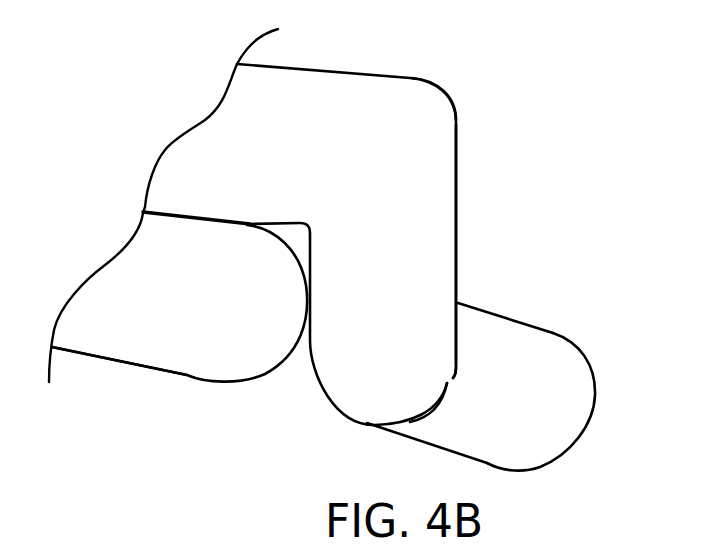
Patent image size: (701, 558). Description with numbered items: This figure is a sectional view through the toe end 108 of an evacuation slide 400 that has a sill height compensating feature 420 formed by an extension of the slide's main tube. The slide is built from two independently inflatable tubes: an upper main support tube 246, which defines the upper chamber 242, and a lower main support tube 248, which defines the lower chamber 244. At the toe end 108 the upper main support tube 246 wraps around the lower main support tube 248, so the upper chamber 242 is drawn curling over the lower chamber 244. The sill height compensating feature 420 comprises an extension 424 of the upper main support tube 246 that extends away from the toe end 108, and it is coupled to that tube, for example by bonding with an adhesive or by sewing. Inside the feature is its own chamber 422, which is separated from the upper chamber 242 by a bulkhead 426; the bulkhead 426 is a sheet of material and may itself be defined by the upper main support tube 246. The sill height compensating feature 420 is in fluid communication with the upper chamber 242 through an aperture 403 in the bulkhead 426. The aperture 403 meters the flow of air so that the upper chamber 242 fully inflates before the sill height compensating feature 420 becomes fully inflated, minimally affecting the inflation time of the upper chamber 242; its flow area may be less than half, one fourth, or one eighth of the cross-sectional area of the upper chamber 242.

The evacuation slide 400 is at (560, 90).
The toe end 108 is at (458, 215).
The upper chamber 242 is at (351, 173).
The lower chamber 244 is at (214, 316).
The upper main support tube 246 is at (448, 89).
The lower main support tube 248 is at (182, 375).
The sill height compensating feature 420 is at (580, 354).
The chamber 422 is at (537, 429).
The extension 424 is at (510, 317).
The bulkhead 426 is at (445, 394).
The aperture 403 is at (455, 378).